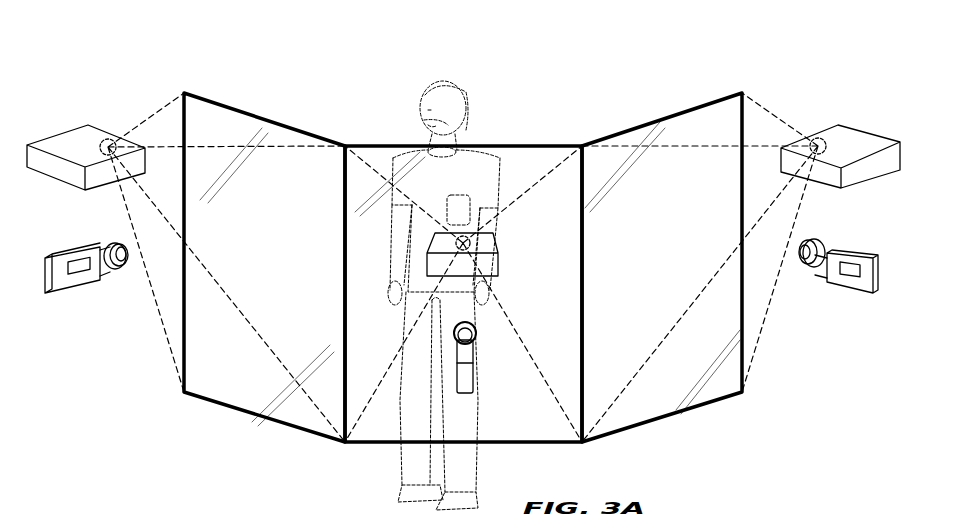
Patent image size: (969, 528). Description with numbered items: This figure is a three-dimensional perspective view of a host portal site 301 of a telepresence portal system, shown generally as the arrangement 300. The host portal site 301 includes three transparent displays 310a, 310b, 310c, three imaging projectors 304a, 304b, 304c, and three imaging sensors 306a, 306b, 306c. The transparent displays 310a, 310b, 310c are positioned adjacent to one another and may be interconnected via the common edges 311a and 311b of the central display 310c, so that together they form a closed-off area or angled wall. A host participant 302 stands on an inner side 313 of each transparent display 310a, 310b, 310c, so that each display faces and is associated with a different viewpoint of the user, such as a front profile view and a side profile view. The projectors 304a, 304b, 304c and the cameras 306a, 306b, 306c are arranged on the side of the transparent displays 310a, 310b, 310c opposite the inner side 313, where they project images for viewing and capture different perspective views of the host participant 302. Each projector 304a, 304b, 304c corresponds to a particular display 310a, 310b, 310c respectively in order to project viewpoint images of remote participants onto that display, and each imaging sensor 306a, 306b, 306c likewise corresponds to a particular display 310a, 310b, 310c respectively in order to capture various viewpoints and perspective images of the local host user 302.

The immersive display environment 300 is at (176, 38).
The host portal site 301 is at (308, 85).
The host participant 302 is at (465, 108).
The imaging projector 304a is at (80, 128).
The imaging projector 304b is at (823, 132).
The imaging projector 304c is at (502, 270).
The imaging sensor 306a is at (80, 250).
The imaging sensor 306b is at (855, 292).
The imaging sensor 306c is at (479, 382).
The transparent display 310a is at (242, 408).
The transparent display 310b is at (640, 424).
The central display 310c is at (392, 444).
The common edge 311a is at (340, 258).
The common edge 311b is at (586, 284).
The inner side 313 is at (546, 132).